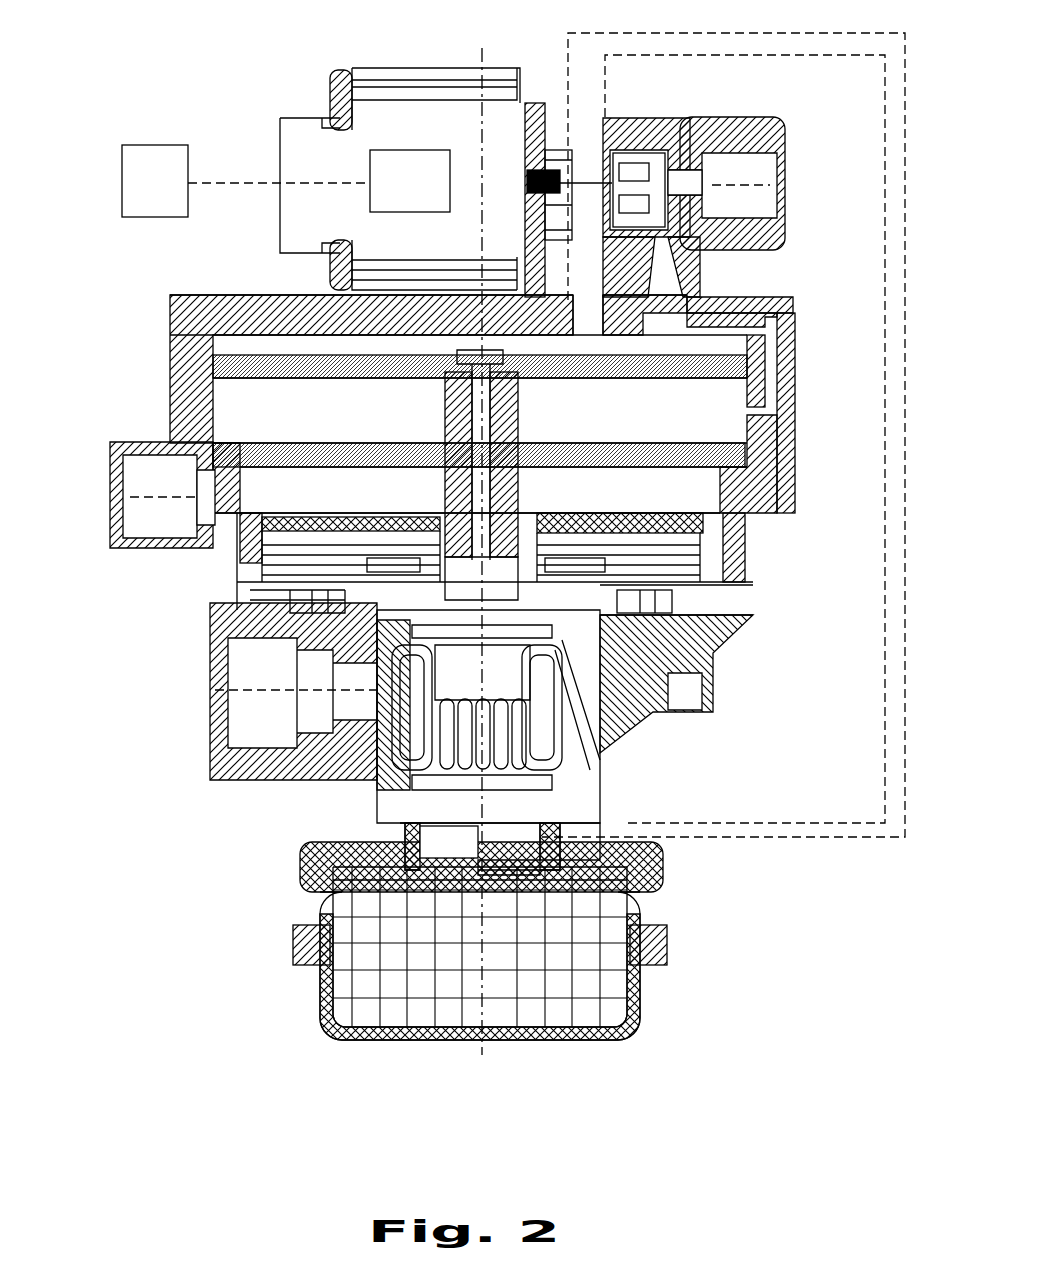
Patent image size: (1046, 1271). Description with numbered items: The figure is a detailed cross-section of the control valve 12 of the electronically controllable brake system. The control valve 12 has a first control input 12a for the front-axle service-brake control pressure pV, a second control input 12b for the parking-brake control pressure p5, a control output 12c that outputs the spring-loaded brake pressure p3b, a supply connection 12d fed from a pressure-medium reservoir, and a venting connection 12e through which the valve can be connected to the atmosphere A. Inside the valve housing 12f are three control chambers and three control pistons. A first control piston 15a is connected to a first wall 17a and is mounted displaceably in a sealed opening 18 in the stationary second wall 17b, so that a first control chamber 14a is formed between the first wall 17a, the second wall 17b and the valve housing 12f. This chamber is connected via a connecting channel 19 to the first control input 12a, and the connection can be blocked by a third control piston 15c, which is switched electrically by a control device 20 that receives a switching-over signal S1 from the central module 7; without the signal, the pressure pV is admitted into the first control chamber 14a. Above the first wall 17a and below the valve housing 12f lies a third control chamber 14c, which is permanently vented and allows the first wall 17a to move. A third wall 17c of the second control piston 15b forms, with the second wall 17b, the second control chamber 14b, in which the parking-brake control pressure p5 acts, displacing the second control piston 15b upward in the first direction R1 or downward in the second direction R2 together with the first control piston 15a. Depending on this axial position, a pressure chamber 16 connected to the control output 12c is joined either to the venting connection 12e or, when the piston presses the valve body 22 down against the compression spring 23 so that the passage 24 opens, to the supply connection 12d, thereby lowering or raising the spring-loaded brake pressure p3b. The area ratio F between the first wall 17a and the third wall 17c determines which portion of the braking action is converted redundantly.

The central module 7 is at (165, 200).
The control device 20 is at (427, 200).
The switching-over signal S1 is at (243, 182).
The first direction R1 is at (70, 178).
The second direction R2 is at (78, 280).
The third control piston 15c is at (624, 150).
The first control input 12a is at (783, 163).
The front-axle service-brake control pressure pV is at (790, 202).
The reservoir pressure pR is at (845, 239).
The connecting channel 19 is at (797, 316).
The valve housing 12f is at (795, 452).
The third control chamber 14c is at (247, 320).
The atmosphere A is at (688, 1028).
The area ratio F is at (158, 406).
The first wall 17a is at (400, 366).
The first control chamber 14a is at (312, 424).
The opening 18 is at (441, 469).
The second control chamber 14b is at (358, 509).
The second wall 17b is at (642, 458).
The first control piston 15a is at (508, 421).
The second control piston 15b is at (522, 522).
The third wall 17c is at (262, 566).
The pressure chamber 16 is at (283, 590).
The control output 12c is at (753, 581).
The spring-loaded brake pressure p3b is at (747, 598).
The second control input 12b is at (110, 471).
The parking-brake control pressure p5 is at (104, 503).
The supply connection 12d is at (210, 746).
The valve body 22 is at (378, 760).
The compression spring 23 is at (605, 749).
The passage 24 is at (610, 701).
The venting connection 12e is at (476, 858).
The control valve 12 is at (234, 899).